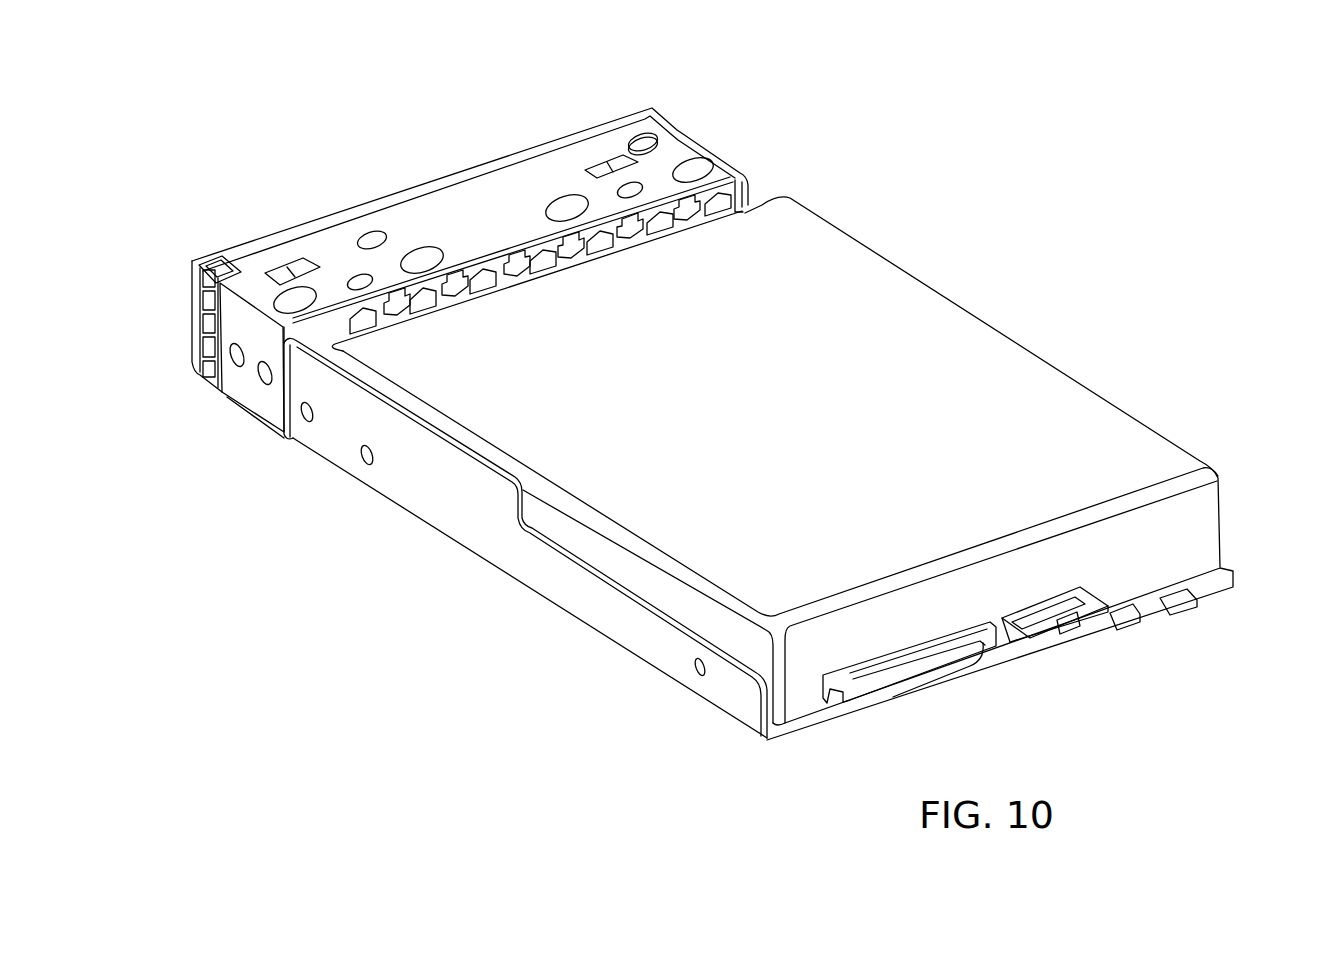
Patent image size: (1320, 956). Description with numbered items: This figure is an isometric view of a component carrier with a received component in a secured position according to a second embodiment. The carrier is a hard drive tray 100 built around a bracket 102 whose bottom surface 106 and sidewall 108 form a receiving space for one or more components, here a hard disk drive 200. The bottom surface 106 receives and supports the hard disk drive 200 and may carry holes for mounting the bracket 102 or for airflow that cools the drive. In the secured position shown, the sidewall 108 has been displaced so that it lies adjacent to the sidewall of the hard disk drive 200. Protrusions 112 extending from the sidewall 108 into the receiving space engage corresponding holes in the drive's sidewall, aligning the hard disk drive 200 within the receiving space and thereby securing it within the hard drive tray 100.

The hard drive tray 100 is at (301, 140).
The bracket 102 is at (288, 408).
The bottom surface 106 is at (880, 697).
The sidewall 108 is at (410, 513).
The protrusion 112 is at (695, 672).
The hard disk drive 200 is at (987, 360).